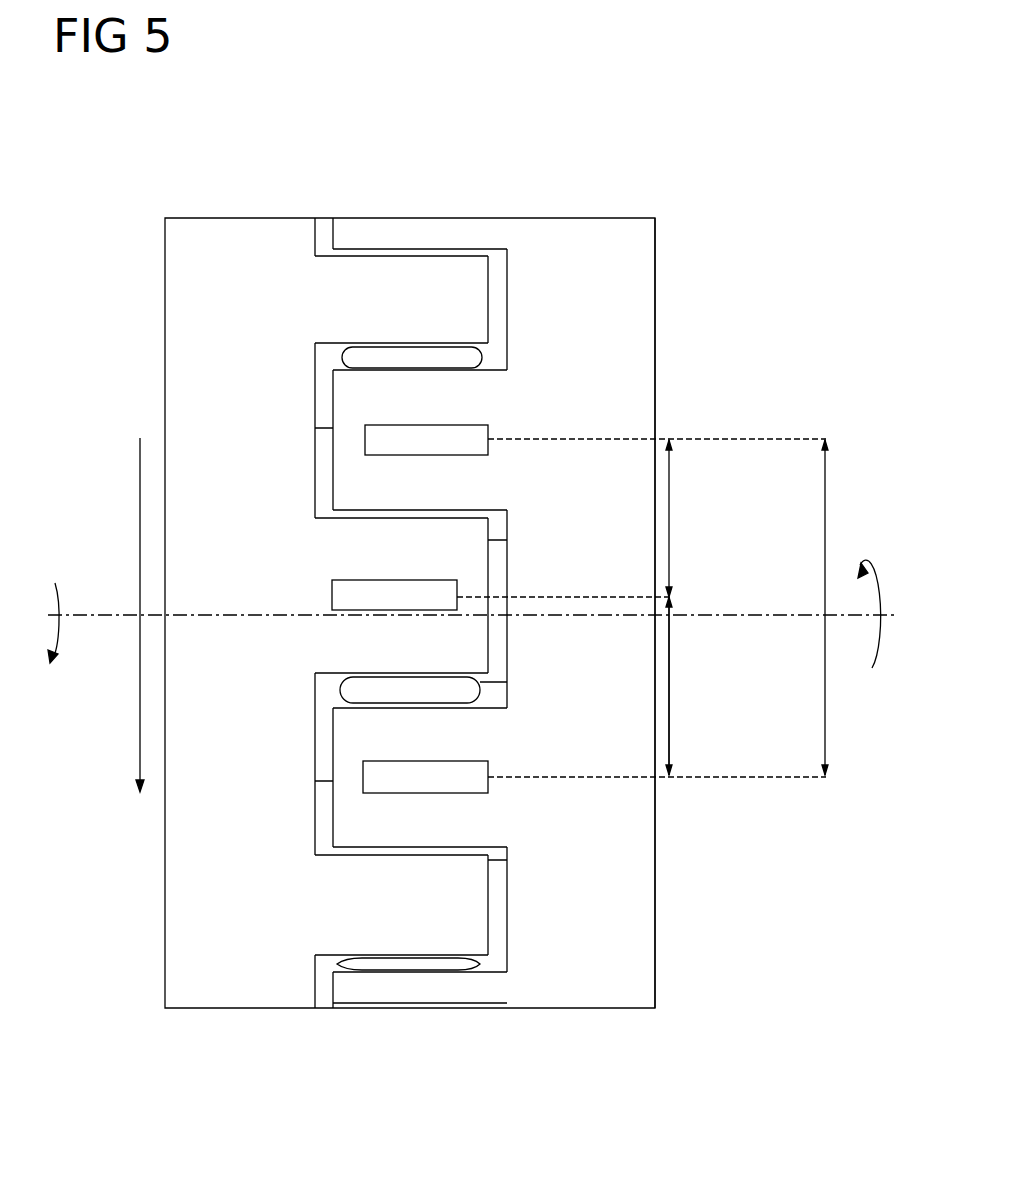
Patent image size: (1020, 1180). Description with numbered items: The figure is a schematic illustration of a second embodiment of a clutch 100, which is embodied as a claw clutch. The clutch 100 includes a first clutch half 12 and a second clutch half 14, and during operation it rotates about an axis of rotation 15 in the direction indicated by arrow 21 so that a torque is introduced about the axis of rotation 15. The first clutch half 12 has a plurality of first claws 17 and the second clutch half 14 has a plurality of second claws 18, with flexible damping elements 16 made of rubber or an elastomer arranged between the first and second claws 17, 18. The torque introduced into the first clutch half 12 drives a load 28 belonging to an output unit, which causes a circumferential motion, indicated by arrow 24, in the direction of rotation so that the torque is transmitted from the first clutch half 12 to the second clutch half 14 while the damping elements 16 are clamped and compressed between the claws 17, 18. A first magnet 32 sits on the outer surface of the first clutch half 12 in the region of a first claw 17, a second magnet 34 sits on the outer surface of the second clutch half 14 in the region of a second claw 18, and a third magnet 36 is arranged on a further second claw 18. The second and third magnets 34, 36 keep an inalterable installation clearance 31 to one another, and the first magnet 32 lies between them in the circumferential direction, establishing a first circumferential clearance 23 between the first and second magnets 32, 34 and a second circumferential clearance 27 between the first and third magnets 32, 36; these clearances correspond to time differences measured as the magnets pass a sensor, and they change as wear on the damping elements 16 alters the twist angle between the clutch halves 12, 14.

The clutch 100 is at (110, 132).
The first clutch half 12 is at (213, 232).
The second clutch half 14 is at (611, 228).
The axis of rotation 15 is at (118, 616).
The flexible damping element 16 is at (368, 357).
The first claw 17 is at (443, 272).
The second claw 18 is at (366, 232).
The arrow 21 is at (66, 668).
The first circumferential clearance 23 is at (669, 698).
The arrow 24 is at (140, 490).
The second circumferential clearance 27 is at (669, 528).
The load 28 is at (868, 655).
The installation clearance 31 is at (825, 579).
The first magnet 32 is at (332, 597).
The second magnet 34 is at (490, 770).
The third magnet 36 is at (490, 432).